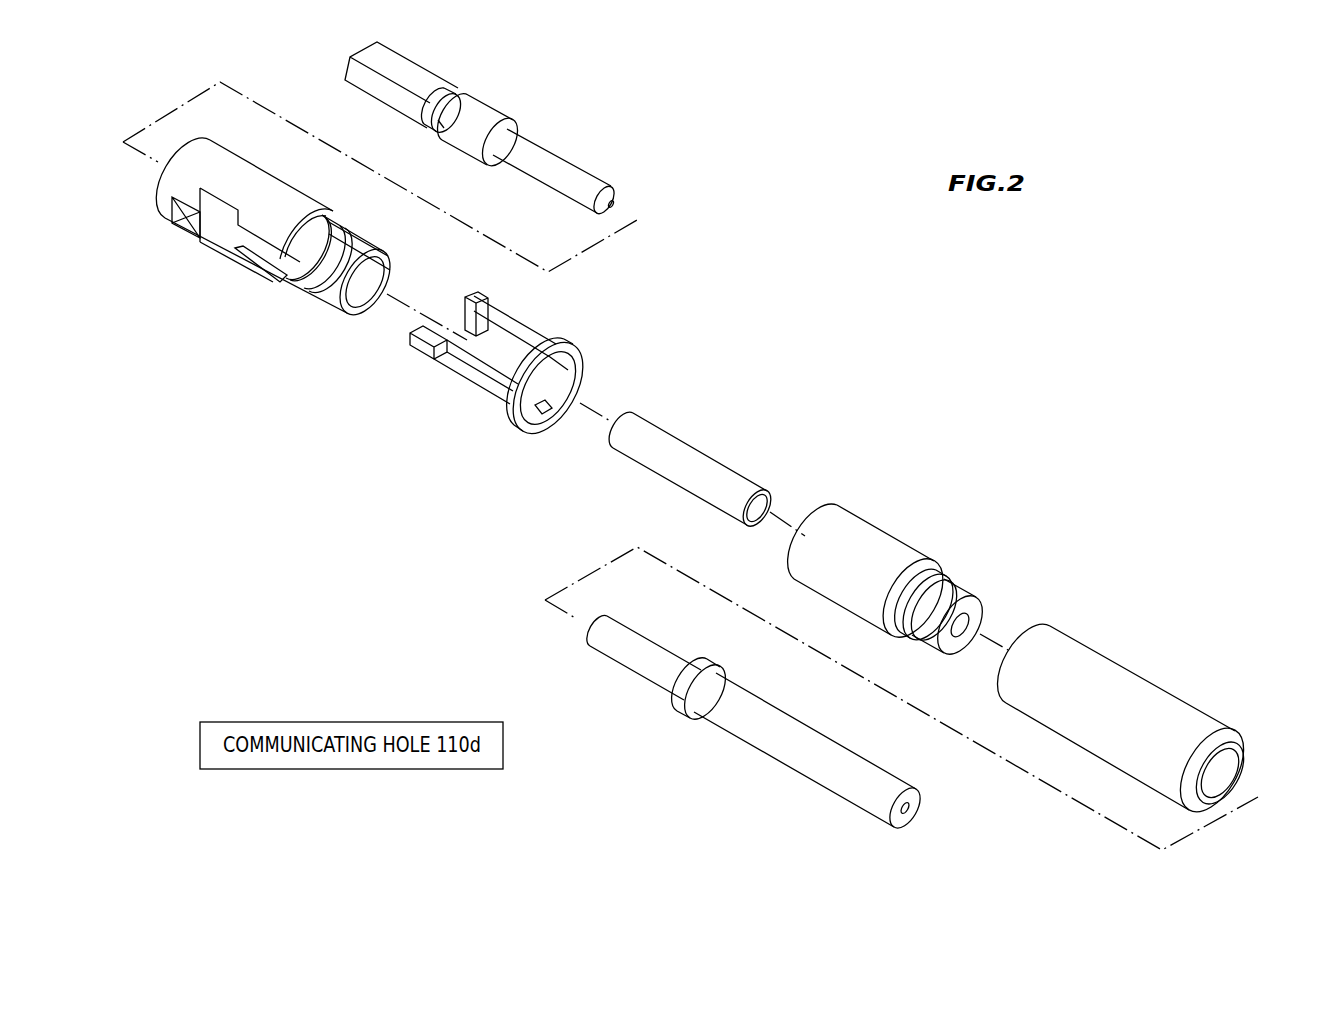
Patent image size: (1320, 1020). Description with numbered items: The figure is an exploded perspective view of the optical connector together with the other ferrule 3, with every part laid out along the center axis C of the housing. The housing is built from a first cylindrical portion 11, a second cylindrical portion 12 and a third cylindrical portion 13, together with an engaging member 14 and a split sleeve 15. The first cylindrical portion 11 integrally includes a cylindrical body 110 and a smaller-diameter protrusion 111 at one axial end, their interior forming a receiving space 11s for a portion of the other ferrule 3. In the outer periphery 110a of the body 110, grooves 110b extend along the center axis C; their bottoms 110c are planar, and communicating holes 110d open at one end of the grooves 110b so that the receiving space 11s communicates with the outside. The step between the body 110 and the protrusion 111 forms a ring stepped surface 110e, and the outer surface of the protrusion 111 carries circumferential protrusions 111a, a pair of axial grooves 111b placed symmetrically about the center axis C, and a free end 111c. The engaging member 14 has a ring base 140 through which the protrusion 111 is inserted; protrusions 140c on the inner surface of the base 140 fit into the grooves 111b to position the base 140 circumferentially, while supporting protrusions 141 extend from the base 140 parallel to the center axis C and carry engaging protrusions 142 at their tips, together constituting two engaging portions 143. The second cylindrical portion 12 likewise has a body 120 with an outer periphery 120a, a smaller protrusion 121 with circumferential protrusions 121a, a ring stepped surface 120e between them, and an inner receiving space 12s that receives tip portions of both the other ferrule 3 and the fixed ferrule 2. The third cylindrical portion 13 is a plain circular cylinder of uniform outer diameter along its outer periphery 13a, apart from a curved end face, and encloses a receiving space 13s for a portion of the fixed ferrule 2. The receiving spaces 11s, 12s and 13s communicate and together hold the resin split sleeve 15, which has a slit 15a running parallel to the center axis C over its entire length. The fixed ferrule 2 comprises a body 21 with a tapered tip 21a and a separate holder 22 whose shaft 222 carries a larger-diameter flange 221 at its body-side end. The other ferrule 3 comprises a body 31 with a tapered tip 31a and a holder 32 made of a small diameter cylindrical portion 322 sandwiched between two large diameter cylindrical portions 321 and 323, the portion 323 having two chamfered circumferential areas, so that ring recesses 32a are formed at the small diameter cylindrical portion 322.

The center axis C is at (580, 403).
The fixed ferrule 2 is at (916, 777).
The other ferrule 3 is at (626, 121).
The first cylindrical portion 11 is at (458, 208).
The receiving space 11s is at (357, 296).
The second cylindrical portion 12 is at (973, 497).
The receiving space 12s is at (958, 636).
The third cylindrical portion 13 is at (1168, 671).
The sleeve outer surface 13a is at (1088, 650).
The receiving space 13s is at (1221, 772).
The engaging member 14 is at (586, 318).
The split sleeve 15 is at (693, 429).
The slit 15a is at (748, 530).
The body 21 is at (647, 637).
The tip 21a is at (583, 627).
The holder 22 is at (795, 745).
The body 31 is at (537, 148).
The tip 31a is at (614, 205).
The holder 32 is at (472, 42).
The ring recesses 32a is at (440, 129).
The body 110 is at (275, 176).
The housing outer surface 110a is at (222, 150).
The grooves 110b is at (265, 258).
The bottoms 110c is at (225, 233).
The communicating holes 110d is at (188, 221).
The ring stepped surface 110e is at (333, 210).
The protrusion 111 is at (345, 227).
The protrusions 111a is at (358, 232).
The grooves 111b is at (318, 213).
The slot 111c is at (387, 260).
The body 120 is at (897, 528).
The fitting body outer surface 120a is at (855, 520).
The ring stepped surface 120e is at (930, 560).
The protrusion 121 is at (953, 577).
The protrusions 121a is at (950, 580).
The base 140 is at (570, 336).
The protrusions 140c is at (583, 380).
The supporting protrusions 141 is at (523, 325).
The engaging protrusions 142 is at (480, 300).
The engaging portions 143 is at (487, 353).
The flange 221 is at (680, 713).
The shaft 222 is at (760, 740).
The large diameter cylindrical portion 321 is at (497, 115).
The small diameter cylindrical portion 322 is at (455, 100).
The large diameter cylindrical portion 323 is at (433, 75).